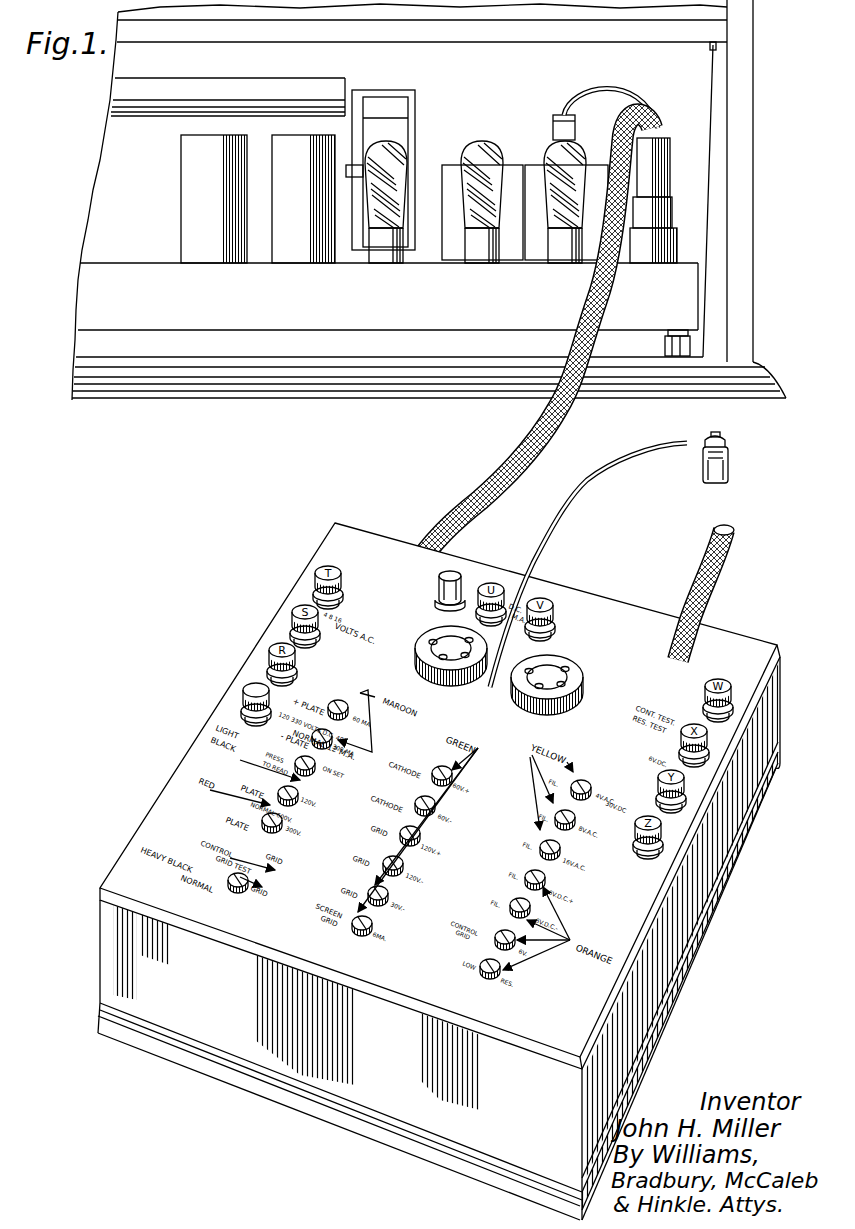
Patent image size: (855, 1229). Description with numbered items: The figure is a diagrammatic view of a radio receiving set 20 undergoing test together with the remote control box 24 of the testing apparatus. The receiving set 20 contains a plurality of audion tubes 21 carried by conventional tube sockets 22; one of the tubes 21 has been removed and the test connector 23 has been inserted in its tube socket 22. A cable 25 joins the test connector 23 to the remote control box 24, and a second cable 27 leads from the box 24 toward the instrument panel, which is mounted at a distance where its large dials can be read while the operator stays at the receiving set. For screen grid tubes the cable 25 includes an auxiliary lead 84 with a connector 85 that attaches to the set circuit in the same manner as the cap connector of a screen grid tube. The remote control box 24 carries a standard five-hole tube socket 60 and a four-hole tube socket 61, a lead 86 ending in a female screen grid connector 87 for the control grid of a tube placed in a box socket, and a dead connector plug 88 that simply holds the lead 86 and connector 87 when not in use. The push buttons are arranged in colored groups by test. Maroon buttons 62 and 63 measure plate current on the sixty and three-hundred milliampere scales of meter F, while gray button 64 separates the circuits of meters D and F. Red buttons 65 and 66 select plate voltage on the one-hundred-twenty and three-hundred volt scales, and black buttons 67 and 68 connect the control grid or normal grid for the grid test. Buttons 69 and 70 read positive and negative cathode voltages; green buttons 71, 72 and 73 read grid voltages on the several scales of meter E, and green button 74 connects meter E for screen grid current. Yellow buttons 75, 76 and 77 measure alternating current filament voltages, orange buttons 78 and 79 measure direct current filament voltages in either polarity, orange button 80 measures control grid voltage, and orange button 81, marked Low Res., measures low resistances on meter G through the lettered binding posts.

The radio receiving set 20 is at (748, 183).
The audion tubes 21 is at (532, 150).
The tube sockets 22 is at (562, 250).
The test connector 23 is at (653, 180).
The remote control box 24 is at (622, 645).
The cable 25 is at (562, 426).
The cable 27 is at (733, 560).
The tube socket 60 is at (434, 634).
The tube socket 61 is at (562, 662).
The push button 62 is at (339, 699).
The push button 63 is at (318, 730).
The push button 64 is at (262, 722).
The push button 65 is at (295, 762).
The push button 66 is at (278, 792).
The push button 67 is at (262, 820).
The push button 68 is at (228, 881).
The push button 69 is at (438, 769).
The push button 70 is at (420, 801).
The push button 71 is at (404, 831).
The push button 72 is at (388, 861).
The push button 73 is at (373, 891).
The push button 74 is at (360, 928).
The push button 75 is at (588, 782).
The push button 76 is at (576, 817).
The push button 77 is at (561, 847).
The push button 78 is at (546, 877).
The push button 79 is at (514, 902).
The push button 80 is at (500, 933).
The push button 81 is at (483, 963).
The auxiliary lead 84 is at (618, 92).
The connector 85 is at (562, 115).
The lead 86 is at (555, 526).
The female screen grid connector 87 is at (729, 461).
The dead connector plug 88 is at (458, 578).